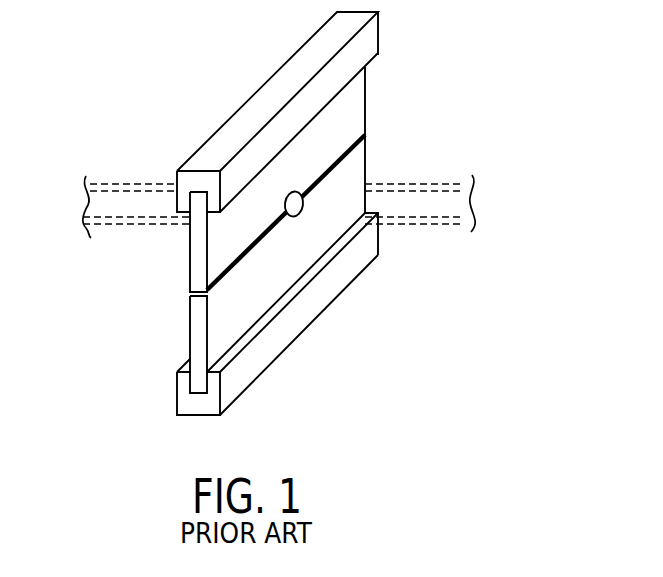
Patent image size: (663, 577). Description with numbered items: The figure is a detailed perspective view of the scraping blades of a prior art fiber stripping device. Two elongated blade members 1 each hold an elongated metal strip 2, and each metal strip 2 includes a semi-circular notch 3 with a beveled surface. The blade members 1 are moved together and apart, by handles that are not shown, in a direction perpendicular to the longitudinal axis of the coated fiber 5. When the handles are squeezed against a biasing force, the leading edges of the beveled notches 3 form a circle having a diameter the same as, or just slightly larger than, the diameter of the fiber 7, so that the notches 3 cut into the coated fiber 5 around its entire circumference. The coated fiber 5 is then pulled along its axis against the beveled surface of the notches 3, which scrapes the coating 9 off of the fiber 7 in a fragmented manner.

The blade member 1 is at (166, 347).
The metal strip 2 is at (190, 264).
The semi-circular notch 3 is at (285, 204).
The coated fiber 5 is at (83, 218).
The fiber 7 is at (132, 197).
The coating 9 is at (102, 173).